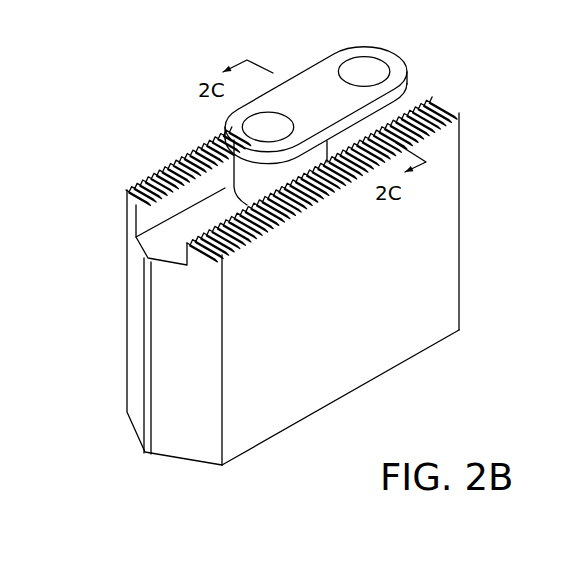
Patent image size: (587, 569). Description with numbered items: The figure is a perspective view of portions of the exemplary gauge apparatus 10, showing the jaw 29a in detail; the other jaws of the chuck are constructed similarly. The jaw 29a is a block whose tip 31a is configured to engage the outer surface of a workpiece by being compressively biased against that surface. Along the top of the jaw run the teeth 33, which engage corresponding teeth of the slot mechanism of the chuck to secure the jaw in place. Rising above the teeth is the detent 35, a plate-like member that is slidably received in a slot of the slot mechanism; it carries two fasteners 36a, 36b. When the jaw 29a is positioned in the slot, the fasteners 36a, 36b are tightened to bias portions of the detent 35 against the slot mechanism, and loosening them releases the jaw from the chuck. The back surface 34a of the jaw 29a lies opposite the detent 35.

The gauge apparatus 10 is at (143, 50).
The jaw 29a is at (325, 375).
The tip 31a is at (150, 350).
The teeth 33 is at (177, 173).
The back surface 34a is at (263, 442).
The detent 35 is at (313, 88).
The fastener 36a is at (253, 133).
The fastener 36b is at (373, 73).